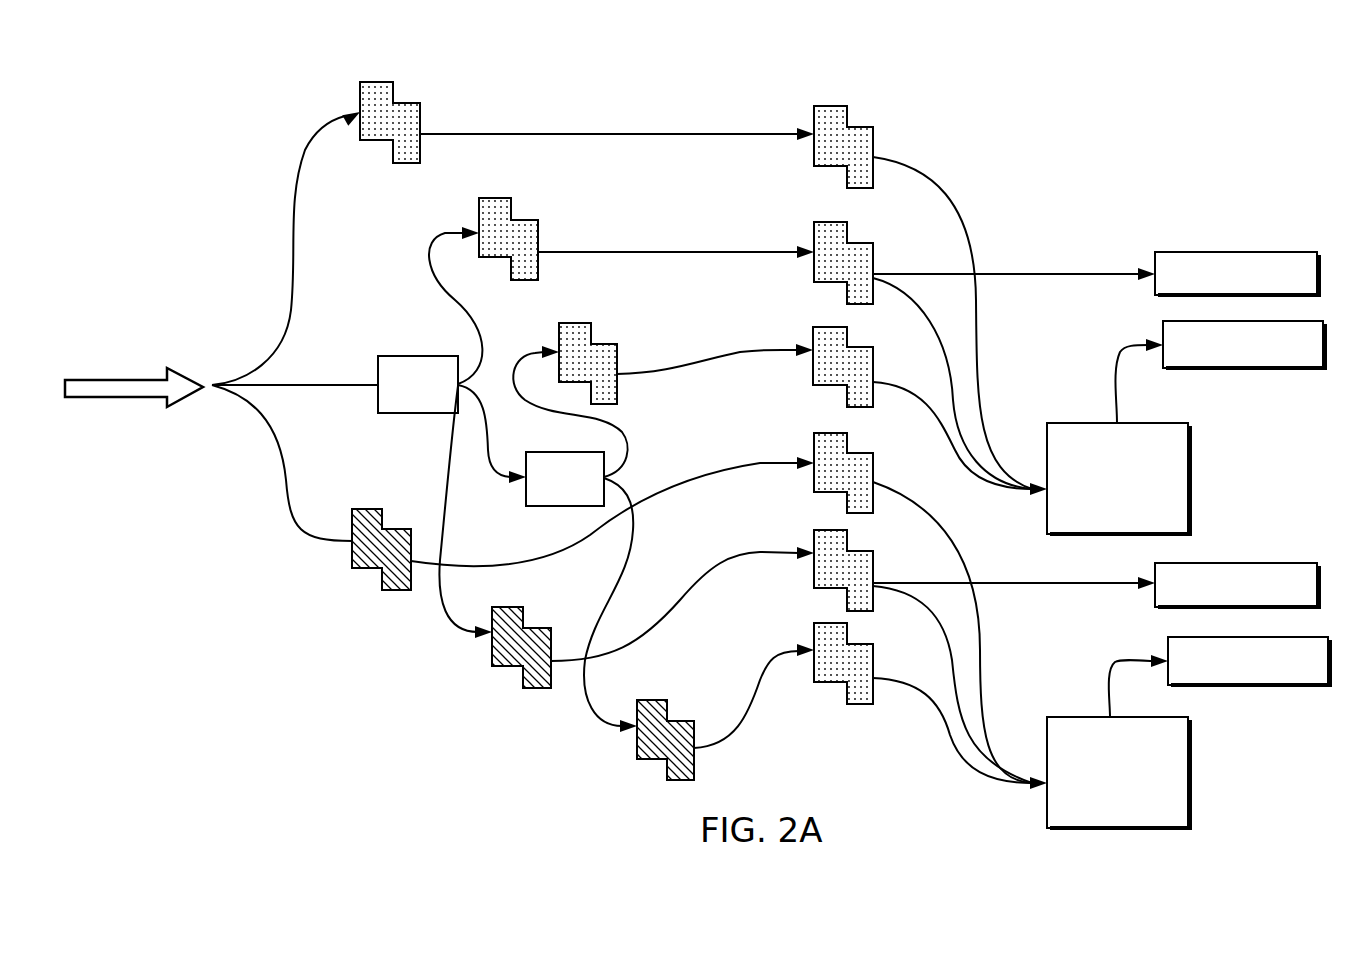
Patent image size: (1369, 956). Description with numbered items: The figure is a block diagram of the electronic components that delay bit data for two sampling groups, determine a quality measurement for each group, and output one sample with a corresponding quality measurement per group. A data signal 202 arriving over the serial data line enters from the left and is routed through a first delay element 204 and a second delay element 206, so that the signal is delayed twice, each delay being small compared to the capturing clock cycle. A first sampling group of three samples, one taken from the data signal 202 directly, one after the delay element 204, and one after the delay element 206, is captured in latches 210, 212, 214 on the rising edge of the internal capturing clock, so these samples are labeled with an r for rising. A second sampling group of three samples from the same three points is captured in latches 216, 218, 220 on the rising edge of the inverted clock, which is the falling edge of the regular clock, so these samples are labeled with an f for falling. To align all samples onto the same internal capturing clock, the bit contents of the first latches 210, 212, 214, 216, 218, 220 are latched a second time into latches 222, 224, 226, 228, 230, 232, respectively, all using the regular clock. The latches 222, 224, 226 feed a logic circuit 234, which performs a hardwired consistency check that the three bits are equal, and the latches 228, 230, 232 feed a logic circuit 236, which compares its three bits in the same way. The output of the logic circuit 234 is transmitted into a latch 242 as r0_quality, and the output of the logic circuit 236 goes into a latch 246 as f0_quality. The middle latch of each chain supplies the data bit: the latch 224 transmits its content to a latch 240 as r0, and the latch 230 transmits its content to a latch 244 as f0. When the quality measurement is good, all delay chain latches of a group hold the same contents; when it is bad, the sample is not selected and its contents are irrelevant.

The data signal 202 is at (117, 380).
The delay element 204 is at (408, 356).
The delay element 206 is at (587, 452).
The latch 210 is at (375, 82).
The latch 212 is at (495, 198).
The latch 214 is at (575, 323).
The latch 216 is at (392, 590).
The latch 218 is at (535, 688).
The latch 220 is at (667, 780).
The latch 222 is at (828, 106).
The latch 224 is at (828, 222).
The latch 226 is at (827, 327).
The latch 228 is at (818, 433).
The latch 230 is at (818, 530).
The latch 232 is at (818, 623).
The logic circuit 234 is at (1190, 462).
The logic circuit 236 is at (1190, 787).
The latch 240 is at (1257, 252).
The latch 242 is at (1252, 368).
The latch 244 is at (1267, 563).
The latch 246 is at (1270, 685).